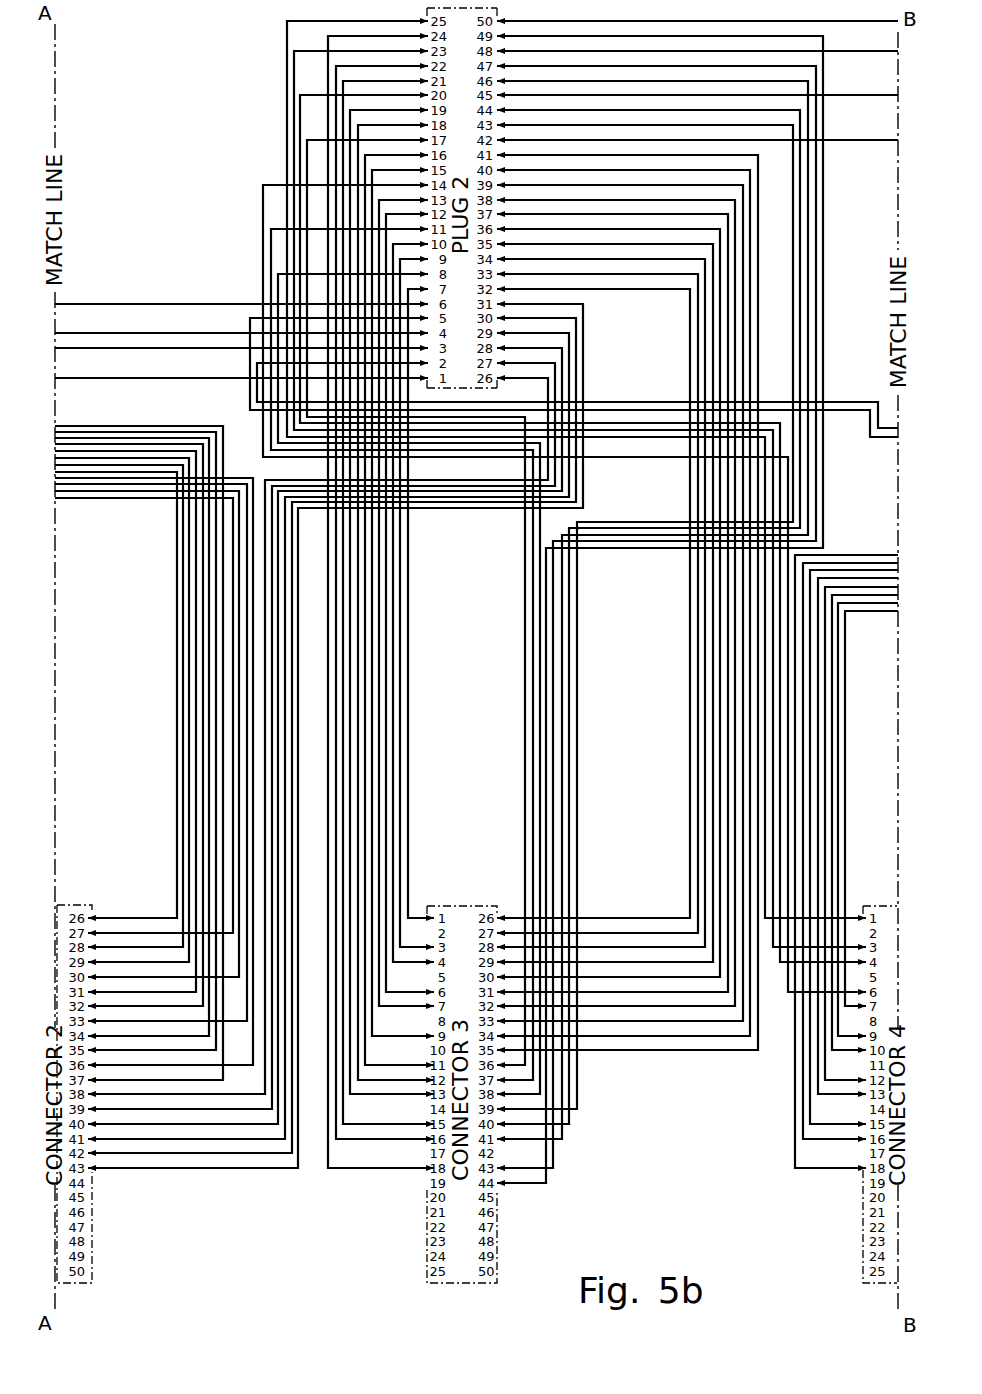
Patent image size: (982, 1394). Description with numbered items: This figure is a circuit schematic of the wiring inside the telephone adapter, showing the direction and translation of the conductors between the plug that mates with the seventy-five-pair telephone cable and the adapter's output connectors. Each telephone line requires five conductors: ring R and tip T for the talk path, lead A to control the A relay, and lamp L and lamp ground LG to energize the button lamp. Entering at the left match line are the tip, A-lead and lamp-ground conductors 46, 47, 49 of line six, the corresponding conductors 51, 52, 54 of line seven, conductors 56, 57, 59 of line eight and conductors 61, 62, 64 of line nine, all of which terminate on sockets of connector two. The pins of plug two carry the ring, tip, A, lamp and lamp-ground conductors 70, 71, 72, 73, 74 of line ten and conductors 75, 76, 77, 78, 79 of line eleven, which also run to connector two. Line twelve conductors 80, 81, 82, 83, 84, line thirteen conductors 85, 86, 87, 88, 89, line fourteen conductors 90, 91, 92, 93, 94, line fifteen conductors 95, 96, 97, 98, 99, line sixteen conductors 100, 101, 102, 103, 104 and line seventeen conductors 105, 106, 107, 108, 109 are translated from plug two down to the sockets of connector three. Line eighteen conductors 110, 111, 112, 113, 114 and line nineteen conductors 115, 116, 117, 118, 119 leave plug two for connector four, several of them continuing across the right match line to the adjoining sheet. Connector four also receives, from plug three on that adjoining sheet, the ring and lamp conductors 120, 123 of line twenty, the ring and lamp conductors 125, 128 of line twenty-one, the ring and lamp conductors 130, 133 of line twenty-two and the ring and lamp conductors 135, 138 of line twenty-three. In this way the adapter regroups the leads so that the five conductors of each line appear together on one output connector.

The tip conductor of line six 46 is at (60, 472).
The A lead conductor of line six 47 is at (102, 492).
The lamp ground conductor of line six 49 is at (60, 458).
The tip conductor of line seven 51 is at (60, 444).
The A lead conductor of line seven 52 is at (60, 498).
The lamp ground conductor of line seven 54 is at (60, 428).
The tip conductor of line eight 56 is at (183, 464).
The A lead conductor of line eight 57 is at (125, 486).
The lamp ground conductor of line eight 59 is at (146, 436).
The tip conductor of line nine 61 is at (108, 430).
The A lead conductor of line nine 62 is at (150, 480).
The lamp ground conductor of line nine 64 is at (190, 450).
The ring conductor of line ten 70 is at (166, 378).
The tip conductor of line ten 71 is at (548, 384).
The A lead conductor of line ten 72 is at (558, 398).
The lamp conductor of line ten 73 is at (84, 352).
The lamp ground conductor of line ten 74 is at (565, 378).
The ring conductor of line eleven 75 is at (166, 333).
The tip conductor of line eleven 76 is at (572, 356).
The A lead conductor of line eleven 77 is at (579, 334).
The lamp conductor of line eleven 78 is at (130, 304).
The lamp ground conductor of line eleven 79 is at (586, 312).
The ring conductor of line twelve 80 is at (408, 612).
The tip conductor of line twelve 81 is at (690, 292).
The A lead conductor of line twelve 82 is at (698, 312).
The lamp conductor of line twelve 83 is at (400, 592).
The lamp ground conductor of line twelve 84 is at (705, 334).
The ring conductor of line thirteen 85 is at (393, 575).
The tip conductor of line thirteen 86 is at (713, 292).
The A lead conductor of line thirteen 87 is at (720, 270).
The lamp conductor of line thirteen 88 is at (387, 538).
The lamp ground conductor of line thirteen 89 is at (728, 250).
The ring conductor of line fourteen 90 is at (403, 522).
The tip conductor of line fourteen 91 is at (735, 228).
The A lead conductor of line fourteen 92 is at (743, 206).
The lamp conductor of line fourteen 93 is at (271, 240).
The lamp ground conductor of line fourteen 94 is at (750, 184).
The ring conductor of line fifteen 95 is at (379, 214).
The tip conductor of line fifteen 96 is at (756, 160).
The A lead conductor of line fifteen 97 is at (263, 262).
The lamp conductor of line fifteen 98 is at (358, 160).
The lamp ground conductor of line fifteen 99 is at (793, 170).
The ring conductor of line sixteen 100 is at (350, 140).
The tip conductor of line sixteen 101 is at (800, 152).
The A lead conductor of line sixteen 102 is at (271, 278).
The lamp conductor of line sixteen 103 is at (343, 90).
The lamp ground conductor of line sixteen 104 is at (808, 130).
The ring conductor of line seventeen 105 is at (336, 80).
The tip conductor of line seventeen 106 is at (816, 110).
The A lead conductor of line seventeen 107 is at (278, 296).
The lamp conductor of line seventeen 108 is at (328, 46).
The lamp ground conductor of line seventeen 109 is at (824, 60).
The ring conductor of line eighteen 110 is at (287, 26).
The tip conductor of line eighteen 111 is at (845, 22).
The A lead conductor of line eighteen 112 is at (250, 326).
The lamp conductor of line eighteen 113 is at (294, 66).
The lamp ground conductor of line eighteen 114 is at (896, 60).
The ring conductor of line nineteen 115 is at (300, 126).
The tip conductor of line nineteen 116 is at (892, 98).
The A lead conductor of line nineteen 117 is at (257, 370).
The lamp conductor of line nineteen 118 is at (263, 196).
The lamp ground conductor of line nineteen 119 is at (892, 142).
The ring conductor of line twenty 120 is at (884, 608).
The lamp conductor of line twenty 123 is at (890, 612).
The ring conductor of line twenty-one 125 is at (893, 596).
The lamp conductor of line twenty-one 128 is at (893, 587).
The ring conductor of line twenty-two 130 is at (893, 578).
The lamp conductor of line twenty-two 133 is at (893, 570).
The ring conductor of line twenty-three 135 is at (848, 564).
The lamp conductor of line twenty-three 138 is at (834, 556).